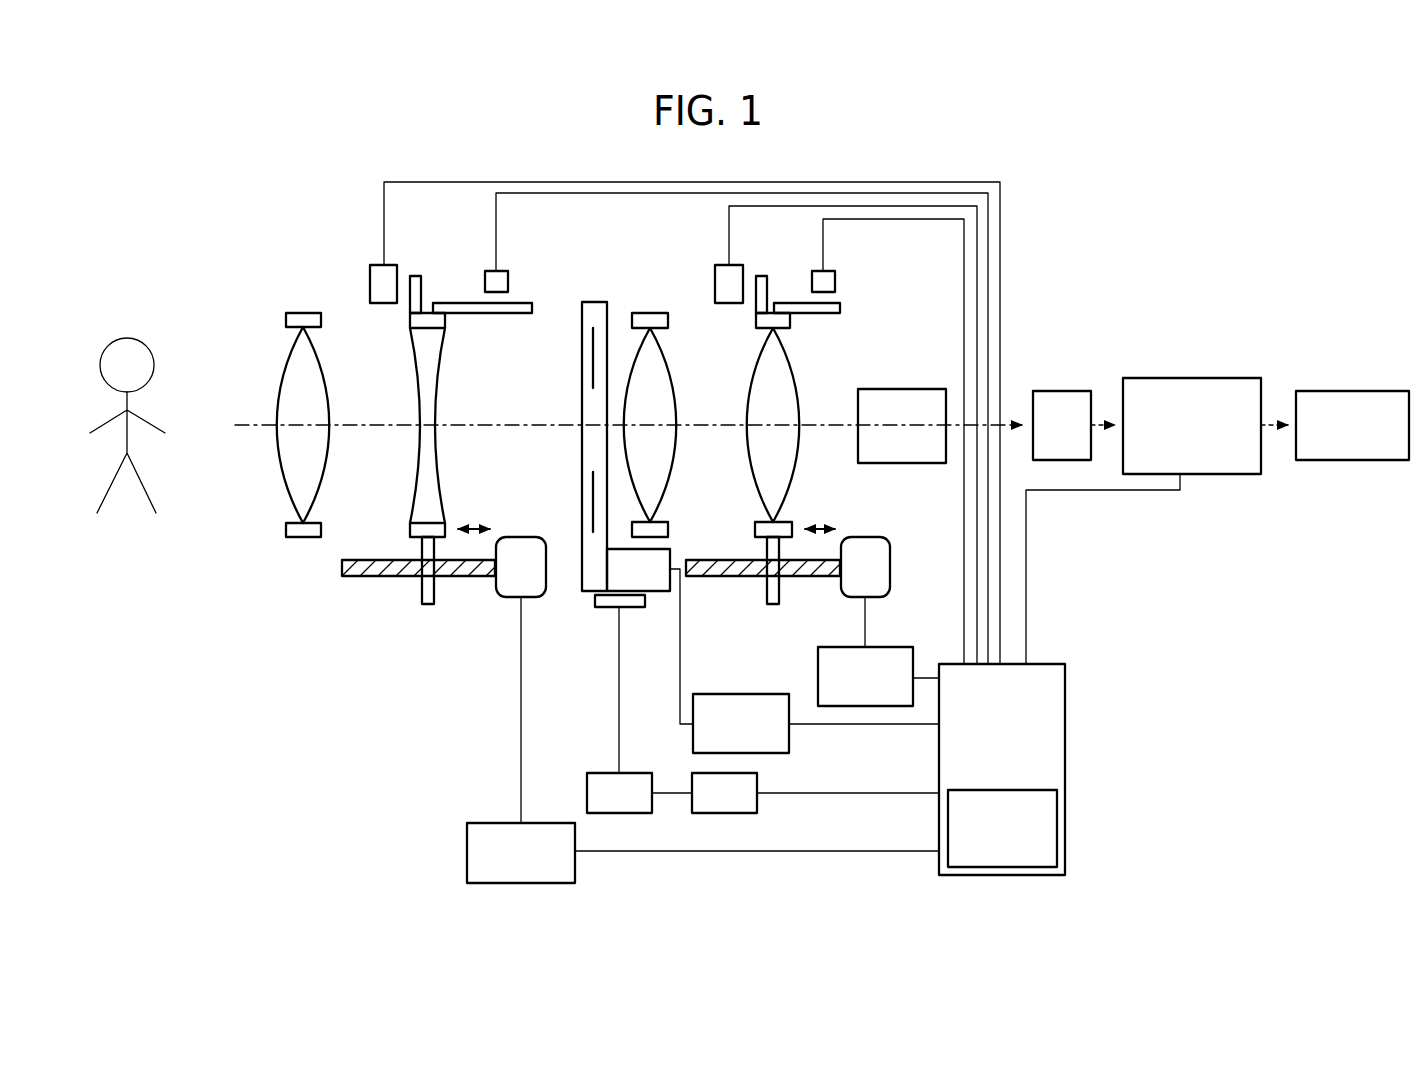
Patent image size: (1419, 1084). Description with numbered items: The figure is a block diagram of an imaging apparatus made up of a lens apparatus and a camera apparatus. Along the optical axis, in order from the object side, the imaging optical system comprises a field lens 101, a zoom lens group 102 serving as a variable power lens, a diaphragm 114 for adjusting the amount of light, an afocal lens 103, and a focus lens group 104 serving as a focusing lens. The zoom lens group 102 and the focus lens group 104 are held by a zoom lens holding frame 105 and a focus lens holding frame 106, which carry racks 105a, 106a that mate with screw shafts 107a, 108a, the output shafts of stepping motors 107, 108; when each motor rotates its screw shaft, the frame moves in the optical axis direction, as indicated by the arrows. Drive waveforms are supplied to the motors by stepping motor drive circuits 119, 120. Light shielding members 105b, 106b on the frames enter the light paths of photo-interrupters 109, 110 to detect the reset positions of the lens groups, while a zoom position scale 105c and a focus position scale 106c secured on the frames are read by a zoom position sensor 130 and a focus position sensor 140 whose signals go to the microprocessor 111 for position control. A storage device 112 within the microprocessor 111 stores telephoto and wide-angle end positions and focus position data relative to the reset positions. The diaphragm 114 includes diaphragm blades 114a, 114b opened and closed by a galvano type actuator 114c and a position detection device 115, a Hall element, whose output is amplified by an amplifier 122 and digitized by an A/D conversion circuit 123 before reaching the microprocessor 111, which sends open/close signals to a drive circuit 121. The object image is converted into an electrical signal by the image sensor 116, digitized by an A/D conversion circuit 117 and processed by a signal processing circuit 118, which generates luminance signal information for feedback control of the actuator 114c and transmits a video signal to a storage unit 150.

The field lens 101 is at (284, 372).
The zoom lens group 102 is at (418, 391).
The afocal lens 103 is at (677, 452).
The focus lens group 104 is at (797, 476).
The zoom lens holding frame 105 is at (410, 322).
The rack 105a is at (428, 606).
The light shielding member 105b is at (415, 276).
The zoom position scale 105c is at (492, 314).
The focus lens holding frame 106 is at (756, 322).
The rack 106a is at (774, 606).
The light shielding member 106b is at (761, 276).
The focus position scale 106c is at (830, 313).
The stepping motor 107 is at (503, 597).
The screw shaft 107a is at (348, 576).
The stepping motor 108 is at (890, 565).
The screw shaft 108a is at (712, 576).
The photo-interrupter 109 is at (371, 287).
The photo-interrupter 110 is at (715, 283).
The microprocessor 111 is at (1066, 697).
The storage device 112 is at (1058, 838).
The diaphragm 114 is at (595, 302).
The diaphragm blade 114a is at (593, 376).
The diaphragm blade 114b is at (593, 490).
The actuator 114c is at (668, 549).
The position detection device 115 is at (598, 608).
The image sensor 116 is at (905, 389).
The A/D conversion circuit 117 is at (1056, 391).
The signal processing circuit 118 is at (1188, 376).
The stepping motor drive circuit 119 is at (477, 823).
The stepping motor drive circuit 120 is at (894, 647).
The drive circuit 121 is at (693, 740).
The amplifier 122 is at (600, 773).
The A/D conversion circuit 123 is at (757, 808).
The zoom position sensor 130 is at (508, 272).
The focus position sensor 140 is at (834, 290).
The storage unit 150 is at (1353, 390).